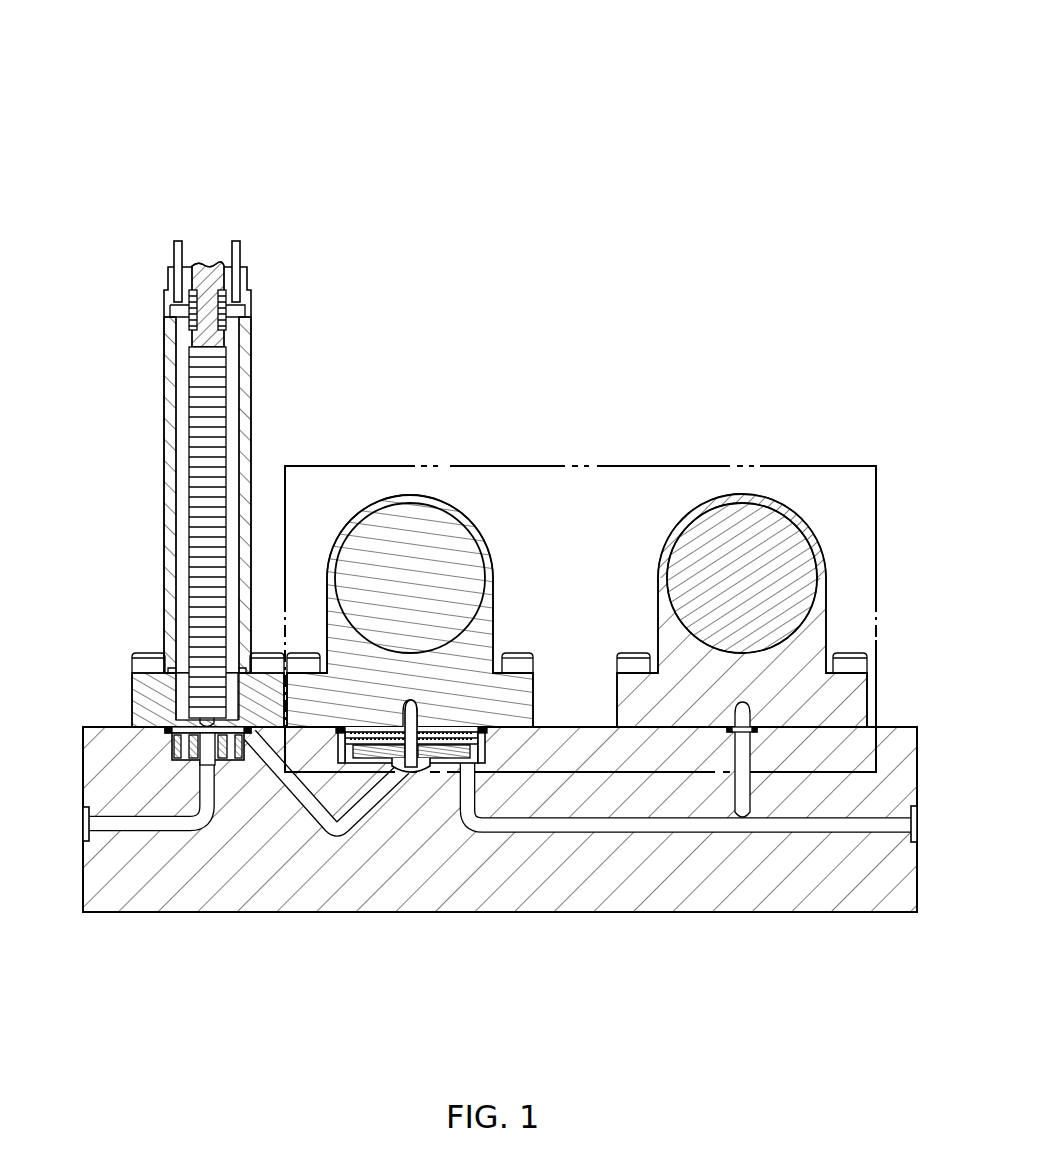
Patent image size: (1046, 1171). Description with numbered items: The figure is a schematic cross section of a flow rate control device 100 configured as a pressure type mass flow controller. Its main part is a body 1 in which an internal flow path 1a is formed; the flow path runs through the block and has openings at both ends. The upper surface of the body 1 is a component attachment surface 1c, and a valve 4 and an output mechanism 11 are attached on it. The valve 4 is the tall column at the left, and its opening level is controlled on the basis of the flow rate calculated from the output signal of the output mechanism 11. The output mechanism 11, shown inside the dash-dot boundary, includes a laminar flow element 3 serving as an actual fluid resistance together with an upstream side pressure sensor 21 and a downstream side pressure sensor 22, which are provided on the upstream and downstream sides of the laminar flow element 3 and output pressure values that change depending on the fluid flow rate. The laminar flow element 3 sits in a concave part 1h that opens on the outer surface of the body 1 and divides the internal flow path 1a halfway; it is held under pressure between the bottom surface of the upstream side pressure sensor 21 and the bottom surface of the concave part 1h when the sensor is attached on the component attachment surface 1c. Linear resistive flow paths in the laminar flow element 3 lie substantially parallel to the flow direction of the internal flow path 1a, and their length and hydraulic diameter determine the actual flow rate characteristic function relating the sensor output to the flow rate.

The flow rate control device 100 is at (500, 511).
The body 1 is at (500, 824).
The internal flow path 1a is at (143, 833).
The component attachment surface 1c is at (572, 727).
The concave part 1h is at (487, 772).
The laminar flow element 3 is at (447, 758).
The valve 4 is at (146, 229).
The output mechanism 11 is at (582, 615).
The upstream side pressure sensor 21 is at (478, 488).
The downstream side pressure sensor 22 is at (828, 497).